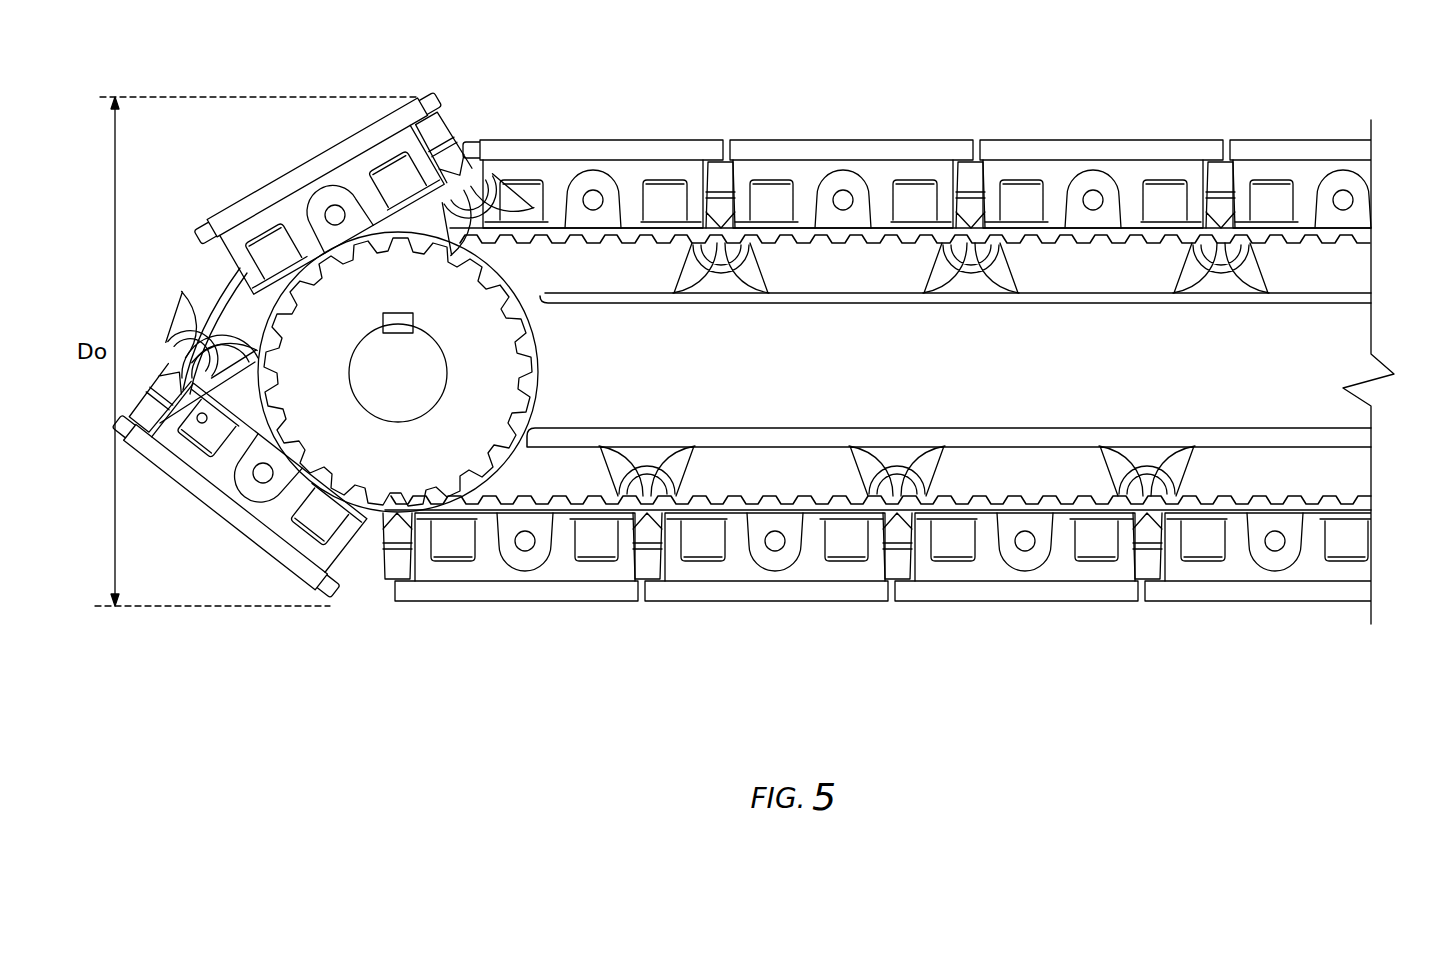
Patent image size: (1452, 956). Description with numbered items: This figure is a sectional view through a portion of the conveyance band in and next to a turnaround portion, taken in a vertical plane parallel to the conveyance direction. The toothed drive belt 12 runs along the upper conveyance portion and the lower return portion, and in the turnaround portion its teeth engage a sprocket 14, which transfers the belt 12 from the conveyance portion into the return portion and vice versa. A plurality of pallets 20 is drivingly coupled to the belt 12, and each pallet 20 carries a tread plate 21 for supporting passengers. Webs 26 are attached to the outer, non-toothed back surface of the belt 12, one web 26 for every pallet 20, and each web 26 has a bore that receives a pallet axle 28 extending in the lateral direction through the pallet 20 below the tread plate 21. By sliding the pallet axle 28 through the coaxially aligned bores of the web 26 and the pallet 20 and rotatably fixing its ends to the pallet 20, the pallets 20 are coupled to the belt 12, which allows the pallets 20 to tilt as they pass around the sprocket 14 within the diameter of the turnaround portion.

The drive belt 12 is at (1126, 258).
The sprocket 14 is at (552, 370).
The pallet 20 is at (372, 110).
The tread plate 21 is at (317, 162).
The web 26 is at (593, 216).
The pallet axle 28 is at (593, 198).